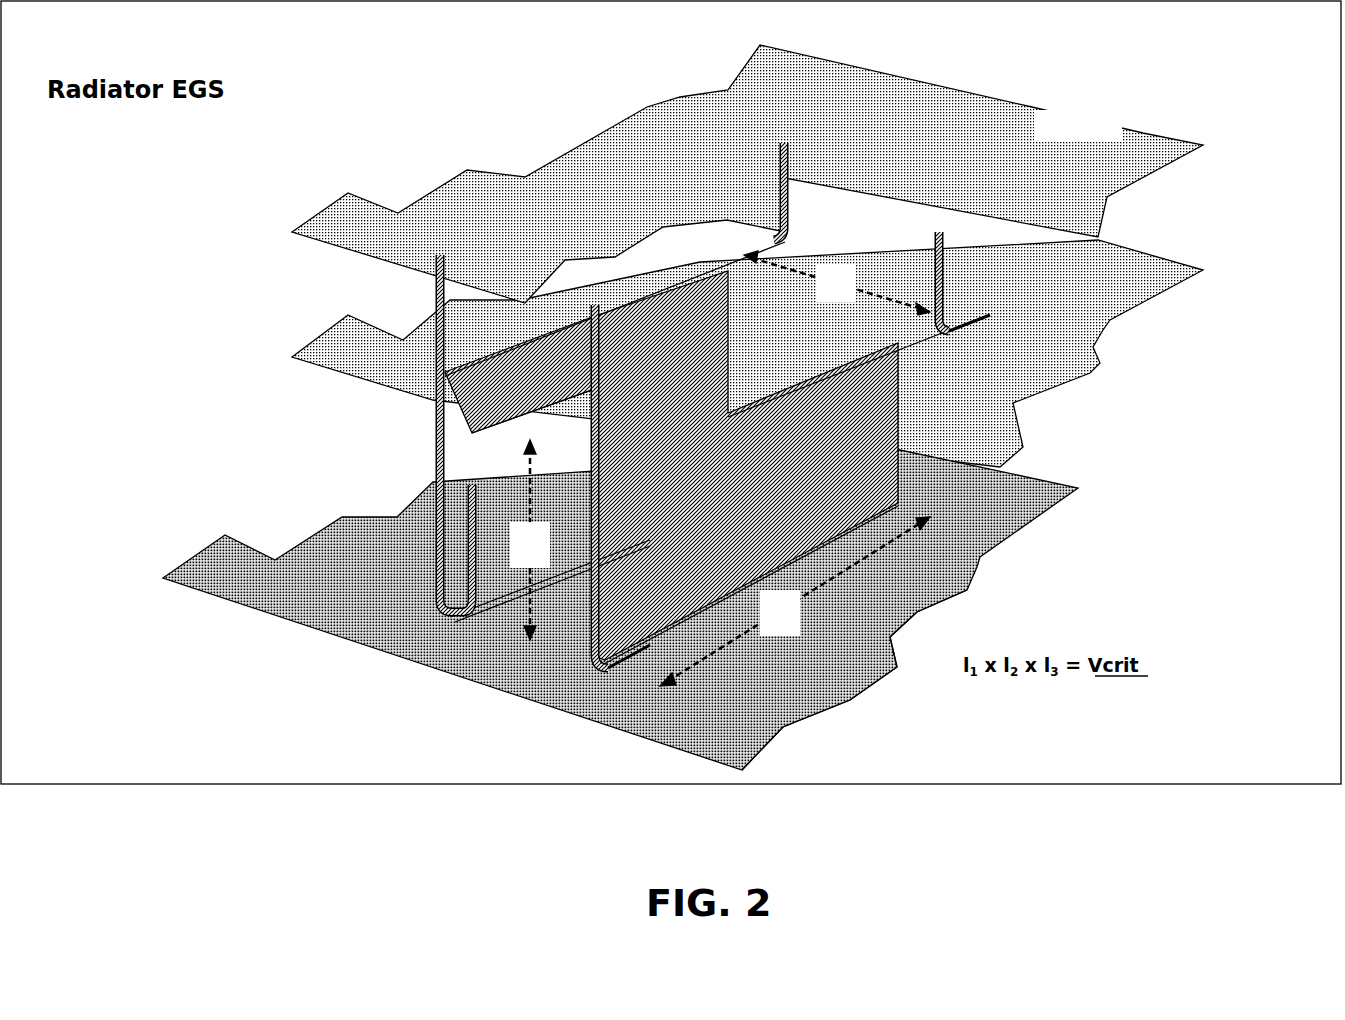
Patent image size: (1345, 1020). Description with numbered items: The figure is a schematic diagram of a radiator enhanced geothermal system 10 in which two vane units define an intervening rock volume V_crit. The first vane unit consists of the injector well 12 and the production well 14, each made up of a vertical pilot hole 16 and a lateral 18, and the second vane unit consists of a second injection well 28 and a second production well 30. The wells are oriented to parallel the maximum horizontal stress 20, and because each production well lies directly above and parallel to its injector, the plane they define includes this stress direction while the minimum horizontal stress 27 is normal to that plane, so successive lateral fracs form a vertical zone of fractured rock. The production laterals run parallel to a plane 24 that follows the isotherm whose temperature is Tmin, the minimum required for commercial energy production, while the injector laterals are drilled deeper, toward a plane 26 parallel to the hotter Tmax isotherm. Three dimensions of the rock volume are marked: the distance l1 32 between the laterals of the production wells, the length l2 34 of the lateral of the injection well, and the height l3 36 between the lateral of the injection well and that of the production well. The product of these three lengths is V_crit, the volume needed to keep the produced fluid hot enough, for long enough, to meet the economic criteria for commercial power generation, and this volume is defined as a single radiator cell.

The system 10 is at (232, 251).
The injector well 12 is at (408, 538).
The production well 14 is at (768, 207).
The vertical pilot hole 16 is at (790, 180).
The lateral 18 is at (663, 287).
The maximum horizontal stress 20 is at (950, 181).
The plane parallel to the Tmin isotherm 24 is at (1096, 348).
The plane parallel to the Tmax isotherm 26 is at (345, 605).
The minimum horizontal stress 27 is at (855, 665).
The second injection well 28 is at (608, 685).
The second production well 30 is at (958, 328).
The distance l1 32 is at (837, 283).
The lateral length l2 34 is at (795, 601).
The height l3 36 is at (535, 540).